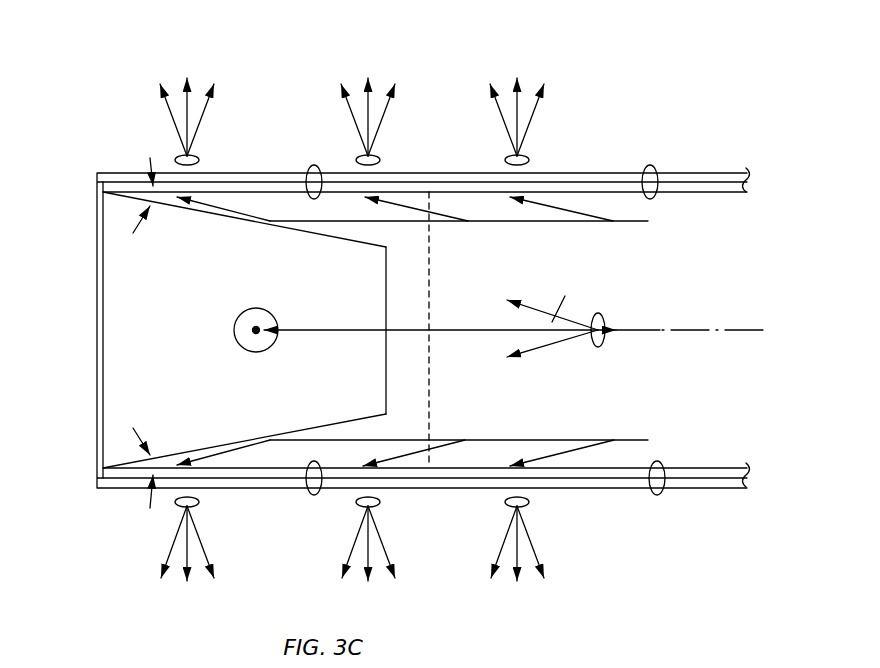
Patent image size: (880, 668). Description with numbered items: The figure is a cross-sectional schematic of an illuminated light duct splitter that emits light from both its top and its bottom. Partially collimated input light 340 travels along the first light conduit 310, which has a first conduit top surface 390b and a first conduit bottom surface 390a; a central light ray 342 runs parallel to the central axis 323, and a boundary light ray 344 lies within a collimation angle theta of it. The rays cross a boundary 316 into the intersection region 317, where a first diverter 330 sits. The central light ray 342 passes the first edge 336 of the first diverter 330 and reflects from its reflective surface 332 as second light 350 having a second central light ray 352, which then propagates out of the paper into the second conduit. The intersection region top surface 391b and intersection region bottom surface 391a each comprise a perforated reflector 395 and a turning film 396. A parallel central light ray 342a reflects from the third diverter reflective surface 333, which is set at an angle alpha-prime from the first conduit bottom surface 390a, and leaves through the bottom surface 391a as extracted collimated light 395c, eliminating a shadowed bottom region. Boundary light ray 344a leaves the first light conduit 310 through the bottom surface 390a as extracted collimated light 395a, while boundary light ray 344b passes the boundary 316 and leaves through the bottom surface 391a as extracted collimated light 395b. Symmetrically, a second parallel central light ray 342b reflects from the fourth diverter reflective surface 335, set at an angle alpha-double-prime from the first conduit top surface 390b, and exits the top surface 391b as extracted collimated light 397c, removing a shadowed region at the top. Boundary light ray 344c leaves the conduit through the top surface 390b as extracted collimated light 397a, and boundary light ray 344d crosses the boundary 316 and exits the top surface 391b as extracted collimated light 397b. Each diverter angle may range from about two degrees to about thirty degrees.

The intersection region 317 is at (282, 73).
The first light conduit 310 is at (690, 173).
The turning film 396 is at (730, 173).
The perforated reflector 395 is at (717, 193).
The first diverter 330 is at (120, 276).
The fourth diverter reflective surface 335 is at (323, 237).
The third diverter reflective surface 333 is at (320, 428).
The reflective surface 332 is at (305, 302).
The second light 350 is at (247, 311).
The second central light ray 352 is at (252, 333).
The first edge 336 is at (387, 353).
The central axis 323 is at (733, 330).
The boundary 316 is at (430, 275).
The partially collimated input light 340 is at (603, 318).
The central light ray 342 is at (548, 333).
The boundary light ray 344 is at (577, 342).
The boundary light ray 344c is at (580, 212).
The boundary light ray 344d is at (413, 210).
The second parallel central light ray 342b is at (520, 223).
The boundary light ray 344a is at (597, 448).
The boundary light ray 344b is at (412, 453).
The parallel central light ray 342a is at (550, 440).
The extracted collimated light 397a is at (530, 159).
The extracted collimated light 397b is at (381, 159).
The extracted collimated light 397c is at (199, 158).
The extracted collimated light 395a is at (530, 505).
The extracted collimated light 395b is at (381, 505).
The extracted collimated light 395c is at (199, 505).
The intersection region bottom surface 391a is at (313, 496).
The intersection region top surface 391b is at (314, 165).
The first conduit bottom surface 390a is at (657, 496).
The first conduit top surface 390b is at (650, 166).